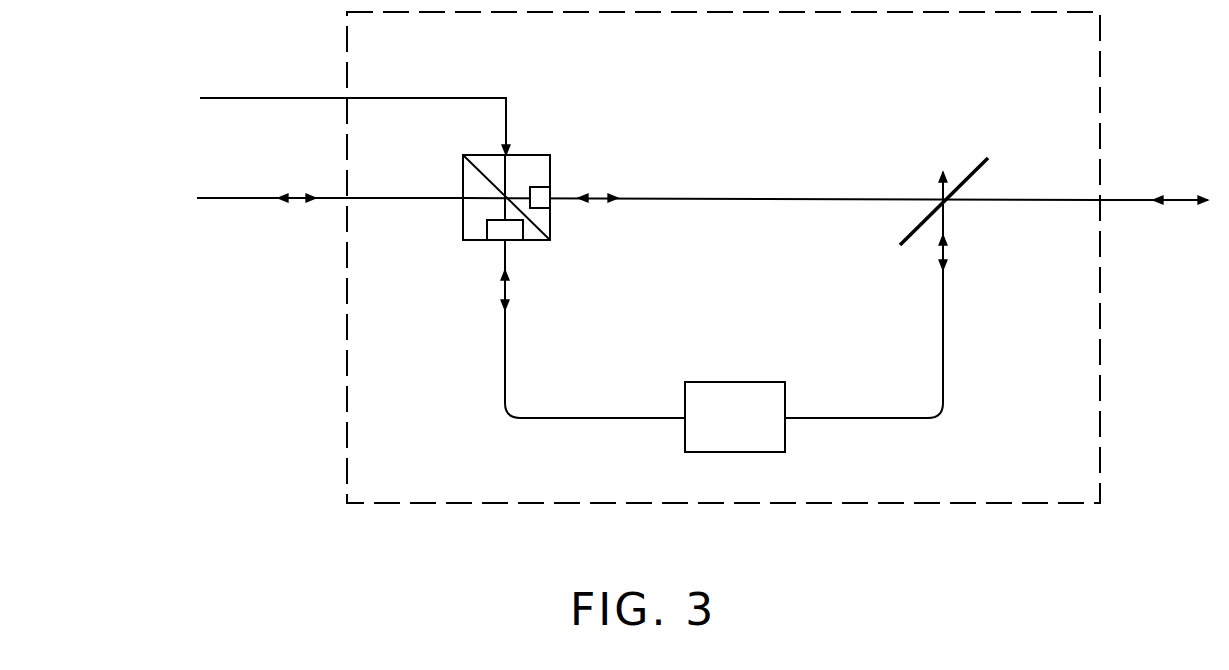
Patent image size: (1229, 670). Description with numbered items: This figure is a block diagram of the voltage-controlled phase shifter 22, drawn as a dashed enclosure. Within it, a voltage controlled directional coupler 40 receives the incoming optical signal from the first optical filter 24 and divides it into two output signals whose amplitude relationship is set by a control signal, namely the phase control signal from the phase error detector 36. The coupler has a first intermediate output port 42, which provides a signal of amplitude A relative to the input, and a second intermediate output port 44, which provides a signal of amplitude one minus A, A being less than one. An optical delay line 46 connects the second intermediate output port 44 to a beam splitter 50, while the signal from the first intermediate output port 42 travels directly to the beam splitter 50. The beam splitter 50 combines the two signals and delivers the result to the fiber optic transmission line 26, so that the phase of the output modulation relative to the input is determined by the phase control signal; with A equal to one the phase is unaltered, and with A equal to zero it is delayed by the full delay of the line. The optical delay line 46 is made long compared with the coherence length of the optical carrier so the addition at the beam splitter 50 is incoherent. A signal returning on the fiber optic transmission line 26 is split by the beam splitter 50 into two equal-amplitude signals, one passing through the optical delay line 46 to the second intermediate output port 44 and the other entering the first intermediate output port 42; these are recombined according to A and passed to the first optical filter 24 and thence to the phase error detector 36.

The voltage-controlled phase shifter 22 is at (978, 503).
The first optical filter 24 is at (283, 199).
The fiber optic transmission line 26 is at (1177, 203).
The phase error detector 36 is at (286, 112).
The voltage controlled directional coupler 40 is at (533, 153).
The first intermediate output port 42 is at (550, 192).
The second intermediate output port 44 is at (525, 240).
The optical delay line 46 is at (686, 453).
The beam splitter 50 is at (989, 162).